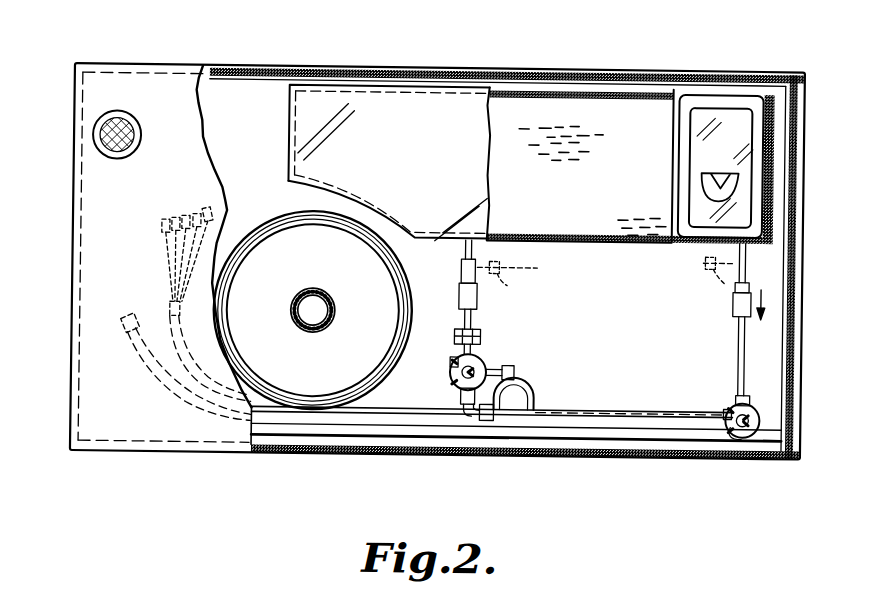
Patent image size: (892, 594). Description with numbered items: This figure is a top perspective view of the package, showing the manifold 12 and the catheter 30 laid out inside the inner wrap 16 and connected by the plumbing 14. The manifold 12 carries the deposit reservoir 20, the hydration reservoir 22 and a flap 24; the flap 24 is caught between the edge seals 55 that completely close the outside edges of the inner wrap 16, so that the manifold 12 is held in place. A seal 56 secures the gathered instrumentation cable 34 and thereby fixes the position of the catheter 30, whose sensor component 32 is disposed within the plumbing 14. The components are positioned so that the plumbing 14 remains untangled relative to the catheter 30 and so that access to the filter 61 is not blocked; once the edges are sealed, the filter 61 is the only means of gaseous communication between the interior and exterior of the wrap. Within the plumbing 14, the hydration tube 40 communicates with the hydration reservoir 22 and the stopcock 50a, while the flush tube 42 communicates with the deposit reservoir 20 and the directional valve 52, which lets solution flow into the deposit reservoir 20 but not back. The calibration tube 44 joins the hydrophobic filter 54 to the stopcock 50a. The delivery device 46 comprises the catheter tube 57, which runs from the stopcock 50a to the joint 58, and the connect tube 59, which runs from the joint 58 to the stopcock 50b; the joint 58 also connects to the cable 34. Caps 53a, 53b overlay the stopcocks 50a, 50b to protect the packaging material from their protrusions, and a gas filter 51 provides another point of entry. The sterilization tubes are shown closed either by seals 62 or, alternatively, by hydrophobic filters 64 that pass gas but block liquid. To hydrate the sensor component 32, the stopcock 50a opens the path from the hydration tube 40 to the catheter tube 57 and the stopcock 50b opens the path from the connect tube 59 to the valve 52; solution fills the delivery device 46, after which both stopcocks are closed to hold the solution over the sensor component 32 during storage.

The manifold 12 is at (591, 119).
The plumbing 14 is at (628, 462).
The inner wrap 16 is at (318, 64).
The deposit reservoir 20 is at (516, 100).
The hydration reservoir 22 is at (696, 93).
The flap 24 is at (777, 92).
The catheter 30 is at (221, 405).
The sensor component 32 is at (537, 455).
The instrumentation cable 34 is at (177, 267).
The hydration tube 40 is at (743, 323).
The flush tube 42 is at (486, 325).
The calibration tube 44 is at (344, 447).
The delivery device 46 is at (612, 444).
The stopcock 50a is at (741, 431).
The stopcock 50b is at (488, 360).
The gas filter 51 is at (525, 363).
The directional valve 52 is at (465, 318).
The cap 53a is at (739, 396).
The cap 53b is at (456, 371).
The filter 54 is at (128, 332).
The edge seals 55 is at (101, 455).
The seal 56 is at (321, 330).
The catheter tube 57 is at (624, 399).
The joint 58 is at (490, 417).
The connect tube 59 is at (456, 421).
The filter 61 is at (119, 112).
The seals 62 is at (505, 277).
The filters 64 is at (524, 261).